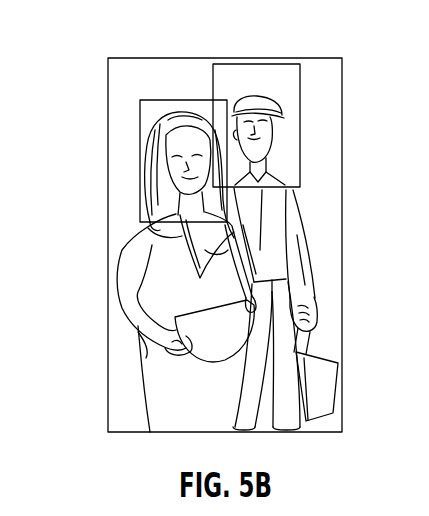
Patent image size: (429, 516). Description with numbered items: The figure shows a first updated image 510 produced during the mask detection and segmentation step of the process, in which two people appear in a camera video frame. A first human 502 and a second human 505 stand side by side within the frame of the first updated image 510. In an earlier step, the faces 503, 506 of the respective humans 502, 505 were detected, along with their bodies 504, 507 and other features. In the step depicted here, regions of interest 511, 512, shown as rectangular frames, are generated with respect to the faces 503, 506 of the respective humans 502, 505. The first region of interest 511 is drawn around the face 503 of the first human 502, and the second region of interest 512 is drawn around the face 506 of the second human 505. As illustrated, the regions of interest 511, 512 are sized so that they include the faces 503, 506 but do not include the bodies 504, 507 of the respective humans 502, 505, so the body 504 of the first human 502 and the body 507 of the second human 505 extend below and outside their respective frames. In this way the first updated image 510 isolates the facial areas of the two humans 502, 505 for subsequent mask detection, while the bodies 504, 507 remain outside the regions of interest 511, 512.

The human 502 is at (134, 395).
The face 503 is at (162, 172).
The body 504 is at (135, 243).
The human 505 is at (329, 343).
The face 506 is at (272, 138).
The body 507 is at (295, 237).
The first updated image 510 is at (328, 51).
The region of interest 511 is at (139, 112).
The region of interest 512 is at (301, 103).